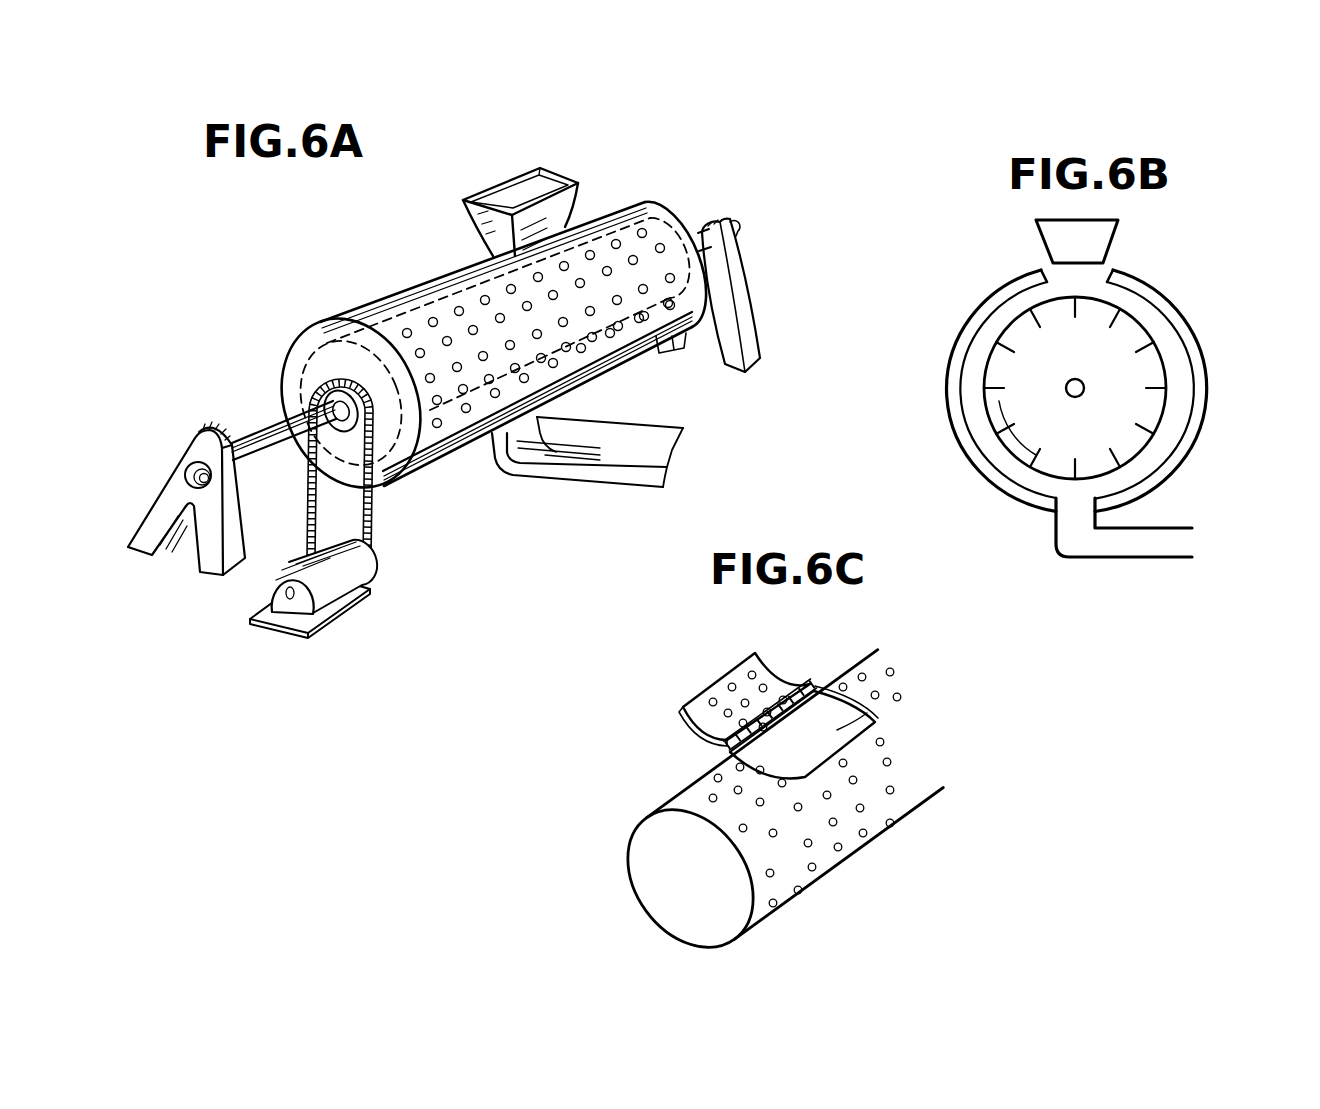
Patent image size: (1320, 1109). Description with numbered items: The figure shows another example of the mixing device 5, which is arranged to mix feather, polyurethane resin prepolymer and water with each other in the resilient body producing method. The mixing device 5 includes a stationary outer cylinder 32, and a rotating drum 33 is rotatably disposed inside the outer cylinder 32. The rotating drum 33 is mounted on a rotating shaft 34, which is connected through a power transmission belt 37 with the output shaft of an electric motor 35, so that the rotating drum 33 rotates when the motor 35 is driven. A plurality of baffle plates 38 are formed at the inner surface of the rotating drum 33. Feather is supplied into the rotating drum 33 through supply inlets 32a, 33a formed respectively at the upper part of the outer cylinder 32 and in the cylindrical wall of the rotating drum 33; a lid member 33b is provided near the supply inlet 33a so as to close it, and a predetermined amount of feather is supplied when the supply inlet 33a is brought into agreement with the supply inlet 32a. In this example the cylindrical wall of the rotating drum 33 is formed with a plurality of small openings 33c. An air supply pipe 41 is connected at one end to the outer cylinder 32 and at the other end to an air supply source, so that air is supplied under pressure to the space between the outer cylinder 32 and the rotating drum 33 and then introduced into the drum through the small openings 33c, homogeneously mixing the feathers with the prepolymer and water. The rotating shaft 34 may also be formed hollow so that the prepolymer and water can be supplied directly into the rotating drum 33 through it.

In FIG. 6A, the mixing device 5 is at (326, 296).
In FIG. 6B, the mixing device 5 is at (932, 399).
In FIG. 6A, the stationary outer cylinder 32 is at (437, 470).
In FIG. 6B, the stationary outer cylinder 32 is at (956, 339).
In FIG. 6A, the supply inlet 32a is at (541, 188).
In FIG. 6B, the supply inlet 32a is at (1092, 241).
In FIG. 6A, the rotating drum 33 is at (455, 297).
In FIG. 6B, the rotating drum 33 is at (1167, 408).
In FIG. 6C, the rotating drum 33 is at (652, 878).
In FIG. 6C, the supply inlet 33a is at (837, 730).
In FIG. 6C, the lid member 33b is at (770, 678).
In FIG. 6A, the small openings 33c is at (640, 254).
In FIG. 6C, the small openings 33c is at (760, 802).
In FIG. 6A, the rotating shaft 34 is at (258, 443).
In FIG. 6B, the rotating shaft 34 is at (1086, 388).
In FIG. 6A, the electric motor 35 is at (322, 589).
In FIG. 6A, the power transmission belt 37 is at (373, 543).
In FIG. 6B, the baffle plates 38 is at (987, 410).
In FIG. 6A, the air supply pipe 41 is at (546, 470).
In FIG. 6B, the air supply pipe 41 is at (1171, 558).